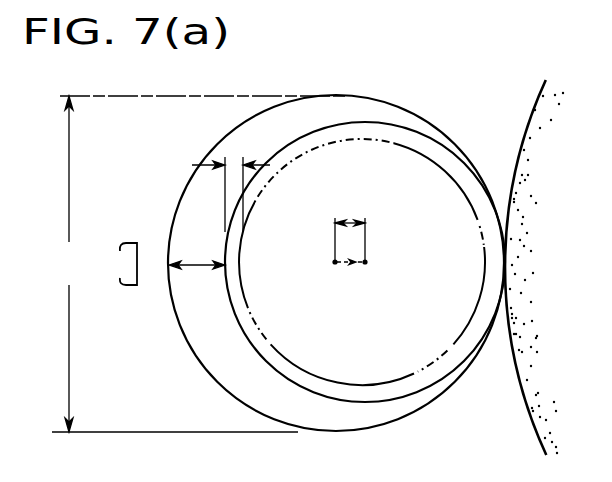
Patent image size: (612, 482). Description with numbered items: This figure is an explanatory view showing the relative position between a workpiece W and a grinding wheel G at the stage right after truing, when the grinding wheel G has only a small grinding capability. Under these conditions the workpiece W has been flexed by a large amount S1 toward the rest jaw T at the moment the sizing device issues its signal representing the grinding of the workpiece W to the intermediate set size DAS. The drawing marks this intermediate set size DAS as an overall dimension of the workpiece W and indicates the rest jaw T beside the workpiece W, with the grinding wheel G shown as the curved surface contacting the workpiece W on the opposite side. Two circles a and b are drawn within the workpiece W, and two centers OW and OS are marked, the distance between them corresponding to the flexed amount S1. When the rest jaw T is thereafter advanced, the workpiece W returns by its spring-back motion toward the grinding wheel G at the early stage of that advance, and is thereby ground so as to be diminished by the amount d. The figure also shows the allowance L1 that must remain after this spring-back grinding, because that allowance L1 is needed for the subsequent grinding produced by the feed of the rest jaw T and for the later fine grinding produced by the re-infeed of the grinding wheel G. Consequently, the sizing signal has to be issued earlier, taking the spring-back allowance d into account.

The workpiece W is at (397, 107).
The outer circle of rolling body a is at (327, 128).
The inner circle of rolling body b is at (430, 158).
The grinding wheel G is at (547, 100).
The rest jaw T is at (127, 241).
The intermediate set size DAS is at (198, 264).
The allowance ground upon spring-back motion d is at (197, 254).
The allowance L1 is at (231, 183).
The flexed amount S1 is at (350, 229).
The centre of wheel OW is at (335, 264).
The centre of offset circle OS is at (365, 264).